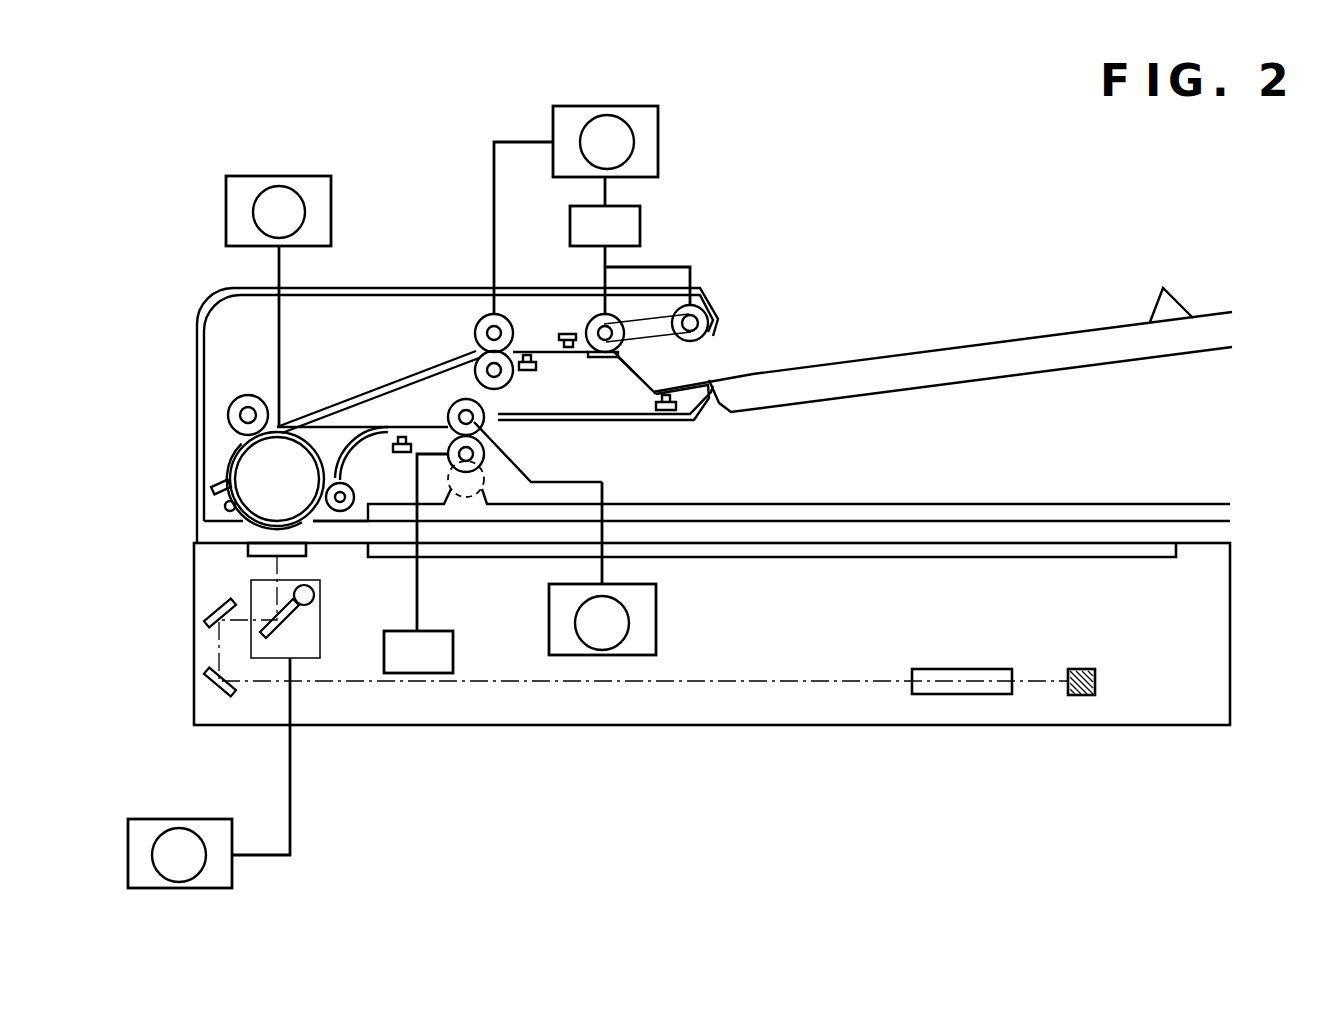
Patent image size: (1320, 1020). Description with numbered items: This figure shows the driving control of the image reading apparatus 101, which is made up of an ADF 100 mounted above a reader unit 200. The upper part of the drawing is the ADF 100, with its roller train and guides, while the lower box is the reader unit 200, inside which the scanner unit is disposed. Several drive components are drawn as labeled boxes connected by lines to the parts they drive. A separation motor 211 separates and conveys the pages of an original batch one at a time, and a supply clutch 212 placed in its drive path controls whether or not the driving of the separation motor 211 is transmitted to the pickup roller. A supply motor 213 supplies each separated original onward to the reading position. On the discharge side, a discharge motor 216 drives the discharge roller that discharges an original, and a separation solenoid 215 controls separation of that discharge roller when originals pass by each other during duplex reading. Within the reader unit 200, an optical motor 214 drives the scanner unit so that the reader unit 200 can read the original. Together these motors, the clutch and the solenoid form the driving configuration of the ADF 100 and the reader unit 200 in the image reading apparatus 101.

The ADF 100 is at (403, 257).
The image reading apparatus 101 is at (925, 125).
The reader unit 200 is at (631, 763).
The separation motor M1 211 is at (651, 78).
The supply clutch CL 212 is at (702, 232).
The supply motor M2 213 is at (320, 146).
The optical motor M4 214 is at (221, 791).
The separation solenoid SL 215 is at (515, 657).
The discharge motor M3 216 is at (718, 624).